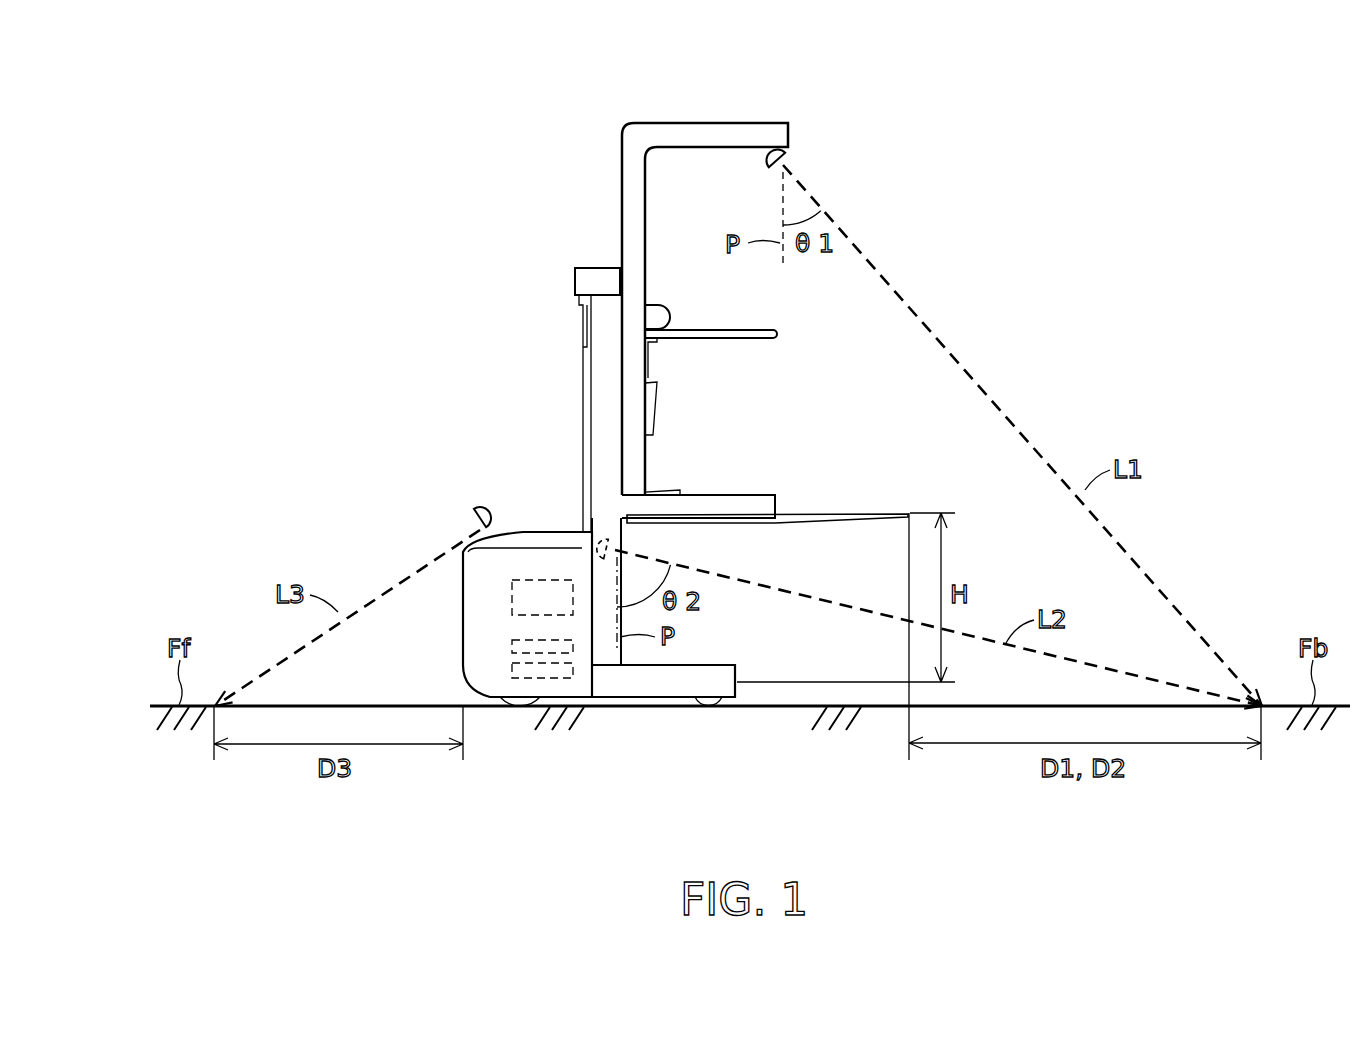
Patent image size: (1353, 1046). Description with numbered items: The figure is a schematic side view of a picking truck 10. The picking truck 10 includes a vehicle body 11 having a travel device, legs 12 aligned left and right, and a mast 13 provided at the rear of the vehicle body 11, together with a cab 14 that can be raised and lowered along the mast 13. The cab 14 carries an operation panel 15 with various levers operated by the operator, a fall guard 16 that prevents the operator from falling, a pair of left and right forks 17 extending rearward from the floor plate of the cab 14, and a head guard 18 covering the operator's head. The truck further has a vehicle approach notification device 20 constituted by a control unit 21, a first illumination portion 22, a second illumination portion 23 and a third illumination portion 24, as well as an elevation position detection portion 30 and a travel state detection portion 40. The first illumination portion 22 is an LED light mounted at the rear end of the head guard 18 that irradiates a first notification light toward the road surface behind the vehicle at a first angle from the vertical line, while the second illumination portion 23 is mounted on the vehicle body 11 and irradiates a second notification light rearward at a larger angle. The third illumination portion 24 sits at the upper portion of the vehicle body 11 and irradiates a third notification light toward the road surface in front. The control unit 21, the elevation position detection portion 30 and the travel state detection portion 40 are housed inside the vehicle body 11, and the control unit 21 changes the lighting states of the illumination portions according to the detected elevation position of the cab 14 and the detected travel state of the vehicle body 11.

The picking truck 10 is at (285, 130).
The vehicle body 11 is at (470, 628).
The legs 12 is at (711, 668).
The mast 13 is at (597, 430).
The cab 14 is at (800, 378).
The operation panel 15 is at (655, 308).
The fall guard 16 is at (697, 336).
The forks 17 is at (857, 512).
The head guard 18 is at (713, 125).
The vehicle approach notification device 20 is at (1098, 292).
The control unit 21 is at (512, 596).
The first illumination portion 22 is at (790, 152).
The second illumination portion 23 is at (603, 545).
The third illumination portion 24 is at (475, 512).
The elevation position detection portion 30 is at (512, 645).
The travel state detection portion 40 is at (512, 672).